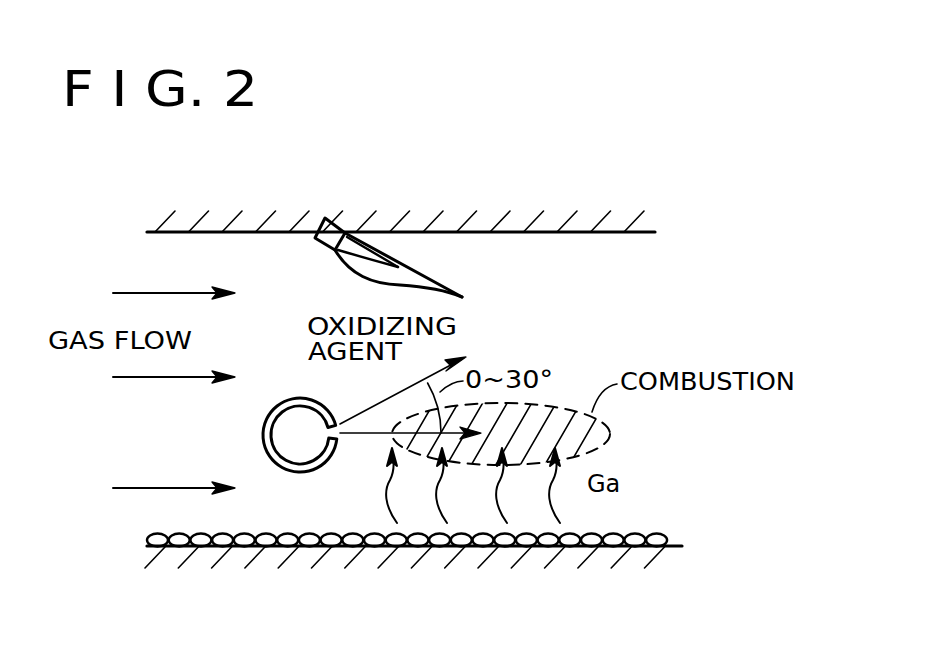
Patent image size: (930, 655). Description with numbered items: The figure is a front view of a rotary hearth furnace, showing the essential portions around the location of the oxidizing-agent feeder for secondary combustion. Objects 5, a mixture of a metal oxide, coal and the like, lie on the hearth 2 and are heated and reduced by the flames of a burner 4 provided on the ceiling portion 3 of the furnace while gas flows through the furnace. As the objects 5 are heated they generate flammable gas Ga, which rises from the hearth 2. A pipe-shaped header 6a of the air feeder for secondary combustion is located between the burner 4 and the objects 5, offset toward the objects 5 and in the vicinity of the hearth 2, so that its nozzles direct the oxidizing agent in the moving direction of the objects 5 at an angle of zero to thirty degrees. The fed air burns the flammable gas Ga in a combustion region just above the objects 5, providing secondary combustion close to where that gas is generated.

The hearth 2 is at (428, 558).
The ceiling portion 3 is at (547, 203).
The burner 4 is at (328, 218).
The objects 5 is at (597, 540).
The header 6a is at (263, 437).